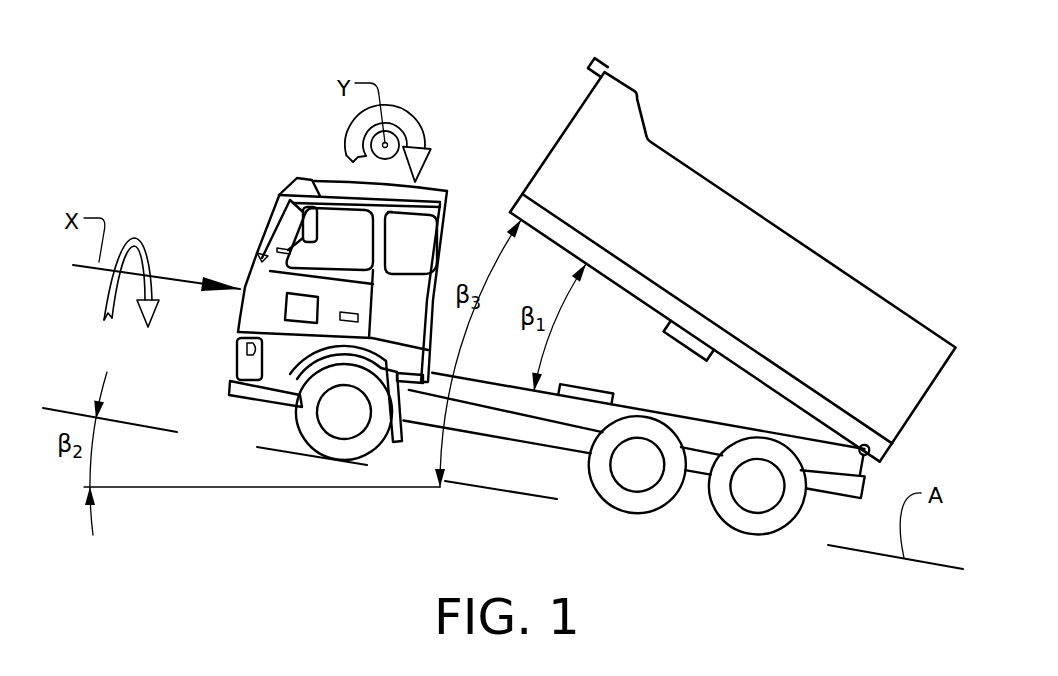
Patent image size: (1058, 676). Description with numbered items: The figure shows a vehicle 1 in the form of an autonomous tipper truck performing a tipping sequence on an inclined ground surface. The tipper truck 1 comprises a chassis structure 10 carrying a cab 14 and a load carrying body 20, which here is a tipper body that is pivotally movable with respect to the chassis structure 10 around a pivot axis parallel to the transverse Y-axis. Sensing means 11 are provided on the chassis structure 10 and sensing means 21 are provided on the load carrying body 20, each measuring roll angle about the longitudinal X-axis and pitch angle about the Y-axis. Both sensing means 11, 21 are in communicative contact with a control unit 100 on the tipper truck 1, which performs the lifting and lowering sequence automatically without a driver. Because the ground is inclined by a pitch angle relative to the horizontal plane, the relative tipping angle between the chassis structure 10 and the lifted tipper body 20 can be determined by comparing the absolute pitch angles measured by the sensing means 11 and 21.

The vehicle 1 is at (191, 61).
The chassis structure 10 is at (533, 406).
The sensing means 11 is at (587, 398).
The cab 14 is at (330, 178).
The load carrying body 20 is at (782, 295).
The sensing means 21 is at (688, 342).
The control unit 100 is at (282, 308).